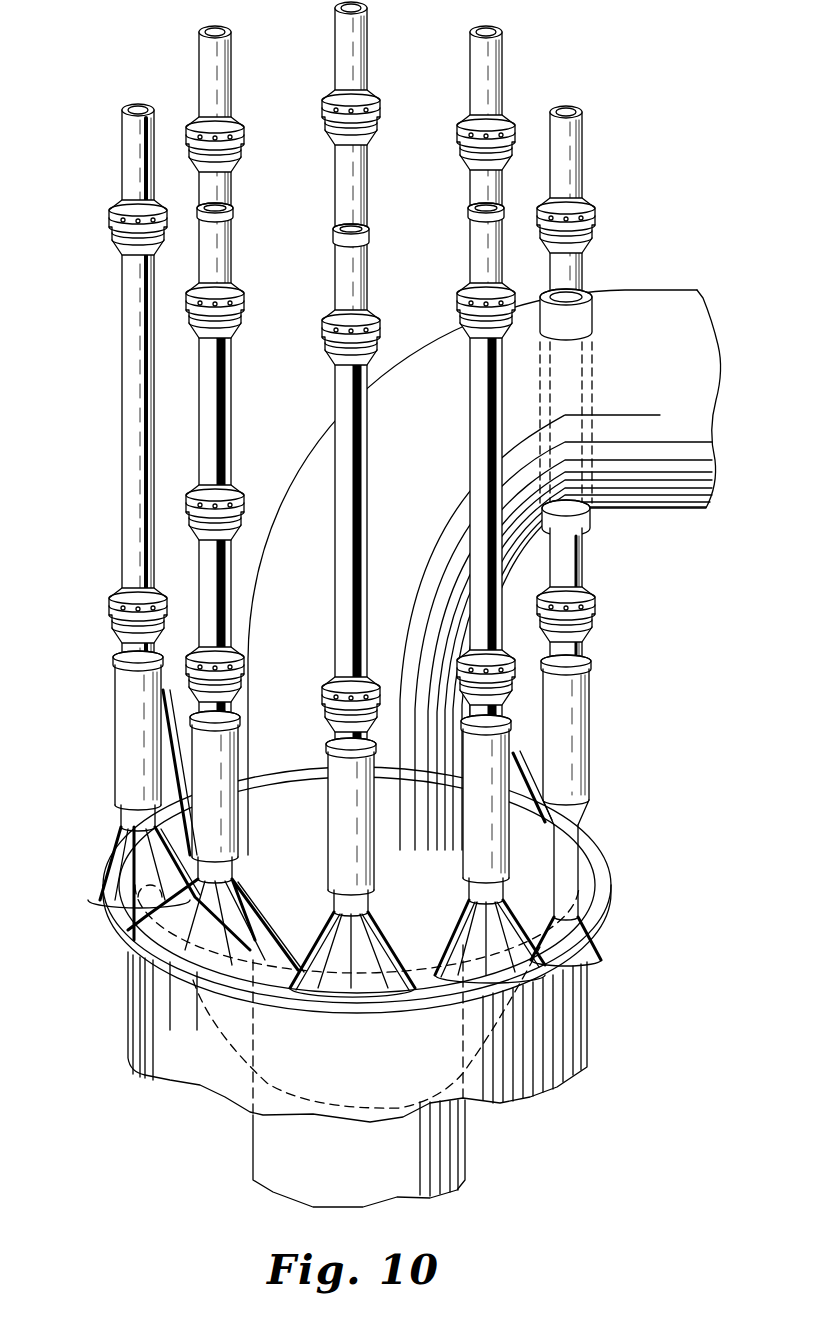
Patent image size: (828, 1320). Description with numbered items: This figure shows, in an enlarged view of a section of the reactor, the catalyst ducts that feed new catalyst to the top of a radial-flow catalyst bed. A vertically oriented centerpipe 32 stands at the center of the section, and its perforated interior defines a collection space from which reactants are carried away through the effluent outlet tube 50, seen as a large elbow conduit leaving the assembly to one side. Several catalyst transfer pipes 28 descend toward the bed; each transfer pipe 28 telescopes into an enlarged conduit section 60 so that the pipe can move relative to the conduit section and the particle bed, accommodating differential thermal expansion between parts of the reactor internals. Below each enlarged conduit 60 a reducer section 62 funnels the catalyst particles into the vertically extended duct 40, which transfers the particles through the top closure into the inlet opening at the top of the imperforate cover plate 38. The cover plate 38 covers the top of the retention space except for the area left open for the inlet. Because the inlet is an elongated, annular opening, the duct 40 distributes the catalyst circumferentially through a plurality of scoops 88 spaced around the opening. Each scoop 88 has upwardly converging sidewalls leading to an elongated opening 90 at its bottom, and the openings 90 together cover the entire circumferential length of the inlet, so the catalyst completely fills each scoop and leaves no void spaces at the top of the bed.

The catalyst transfer pipe 28 is at (597, 263).
The centerpipe 32 is at (466, 1158).
The cover plate 38 is at (487, 1033).
The duct 40 is at (110, 855).
The effluent outlet tube 50 is at (622, 290).
The enlarged conduit section 60 is at (592, 690).
The reducer section 62 is at (585, 805).
The scoop 88 is at (590, 848).
The elongated opening 90 is at (590, 958).